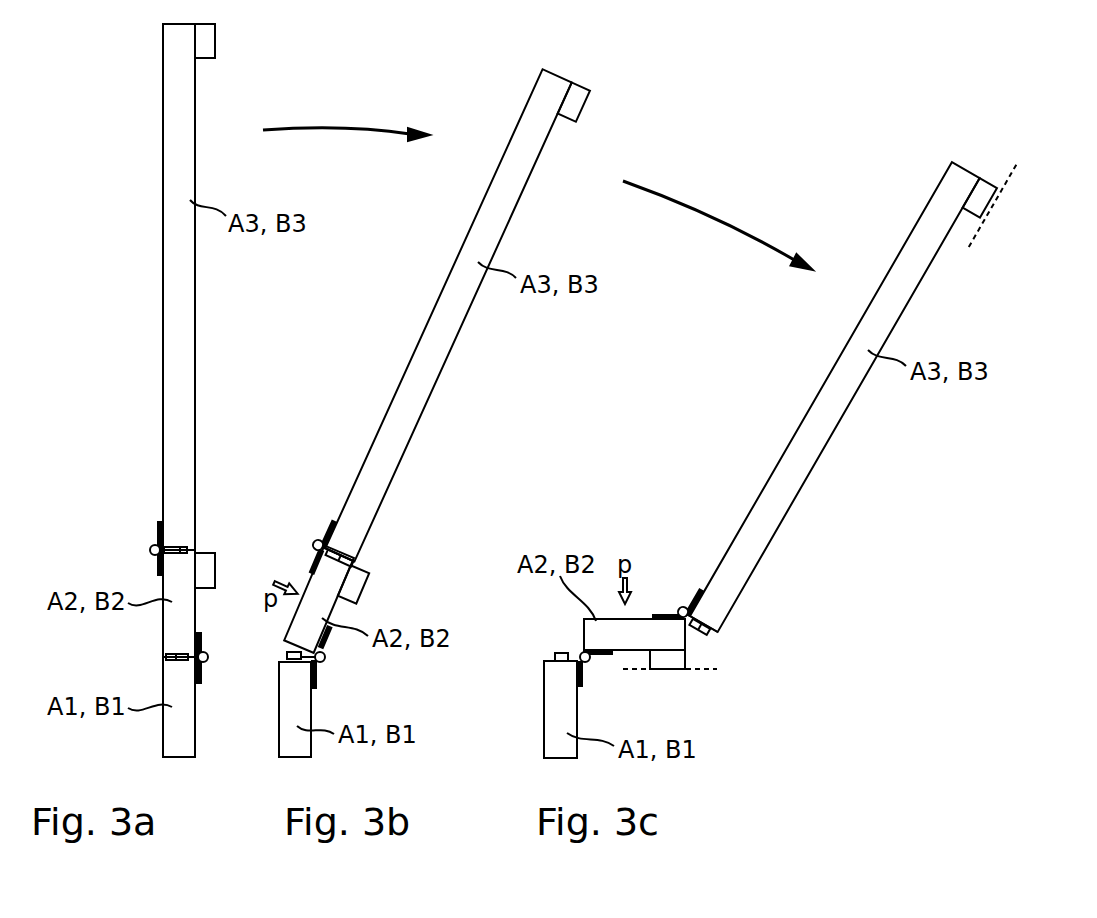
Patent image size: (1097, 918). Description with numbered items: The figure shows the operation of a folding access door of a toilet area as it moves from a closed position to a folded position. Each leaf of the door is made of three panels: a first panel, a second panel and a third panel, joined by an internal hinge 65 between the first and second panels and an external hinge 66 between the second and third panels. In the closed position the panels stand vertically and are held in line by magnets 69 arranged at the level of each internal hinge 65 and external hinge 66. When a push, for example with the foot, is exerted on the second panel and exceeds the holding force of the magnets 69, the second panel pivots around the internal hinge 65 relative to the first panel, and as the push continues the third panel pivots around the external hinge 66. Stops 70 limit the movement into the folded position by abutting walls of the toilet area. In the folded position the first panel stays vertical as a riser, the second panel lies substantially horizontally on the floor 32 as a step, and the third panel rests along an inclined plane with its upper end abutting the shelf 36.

In FIG. 3C, the floor 32 is at (703, 672).
In FIG. 3C, the shelf 36 is at (1016, 168).
In FIG. 3A, the internal hinge 65 is at (208, 652).
In FIG. 3B, the internal hinge 65 is at (326, 661).
In FIG. 3C, the internal hinge 65 is at (590, 662).
In FIG. 3A, the external hinge 66 is at (150, 551).
In FIG. 3B, the external hinge 66 is at (317, 538).
In FIG. 3C, the external hinge 66 is at (683, 606).
In FIG. 3A, the magnets 69 is at (186, 550).
In FIG. 3B, the magnets 69 is at (357, 560).
In FIG. 3C, the magnets 69 is at (558, 653).
In FIG. 3A, the stops 70 is at (203, 43).
In FIG. 3B, the stops 70 is at (577, 101).
In FIG. 3C, the stops 70 is at (985, 205).